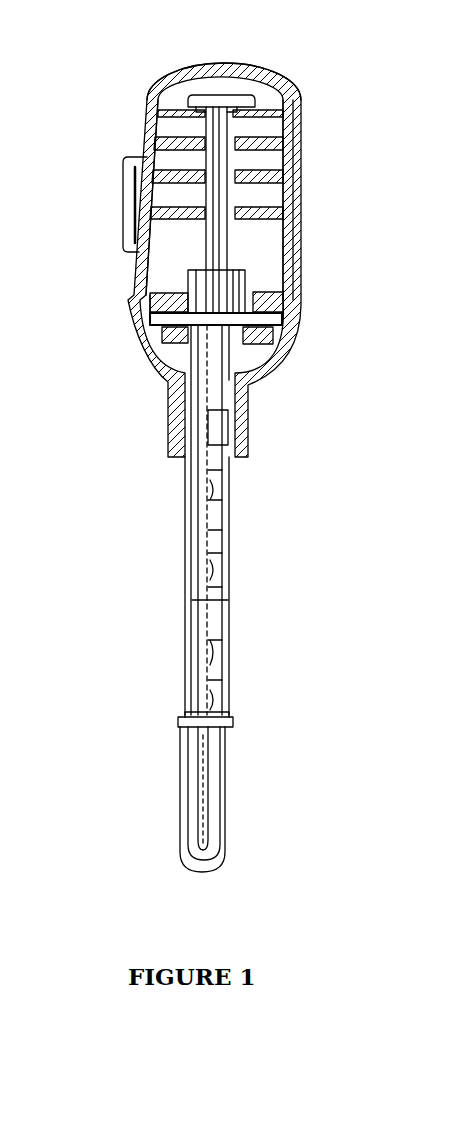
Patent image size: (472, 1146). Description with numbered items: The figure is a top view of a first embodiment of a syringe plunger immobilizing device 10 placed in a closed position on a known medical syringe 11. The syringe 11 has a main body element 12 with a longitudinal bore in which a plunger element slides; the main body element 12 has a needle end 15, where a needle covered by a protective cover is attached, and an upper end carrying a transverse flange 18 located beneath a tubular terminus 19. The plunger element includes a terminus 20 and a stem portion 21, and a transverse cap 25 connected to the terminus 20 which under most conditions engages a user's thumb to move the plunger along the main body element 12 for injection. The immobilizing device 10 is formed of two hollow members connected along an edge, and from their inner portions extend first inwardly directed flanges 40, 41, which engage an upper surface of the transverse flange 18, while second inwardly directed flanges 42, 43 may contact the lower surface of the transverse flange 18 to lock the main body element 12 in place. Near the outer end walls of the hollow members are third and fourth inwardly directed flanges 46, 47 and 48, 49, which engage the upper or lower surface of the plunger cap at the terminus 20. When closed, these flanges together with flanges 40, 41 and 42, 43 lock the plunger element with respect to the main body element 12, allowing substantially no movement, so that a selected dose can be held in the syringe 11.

The syringe plunger immobilizing device 10 is at (332, 172).
The medical syringe 11 is at (250, 513).
The main body element 12 is at (221, 635).
The needle end 15 is at (237, 697).
The transverse flange 18 is at (262, 320).
The tubular terminus 19 is at (240, 283).
The terminus 20 is at (205, 106).
The stem portion 21 is at (207, 250).
The transverse cap 25 is at (207, 104).
The first inwardly directed flange 40 is at (165, 302).
The first inwardly directed flange 41 is at (262, 292).
The second inwardly directed flange 42 is at (162, 333).
The second inwardly directed flange 43 is at (287, 343).
The third inwardly directed flange 46 is at (130, 158).
The third inwardly directed flange 47 is at (270, 137).
The fourth inwardly directed flange 48 is at (158, 95).
The fourth inwardly directed flange 49 is at (283, 96).